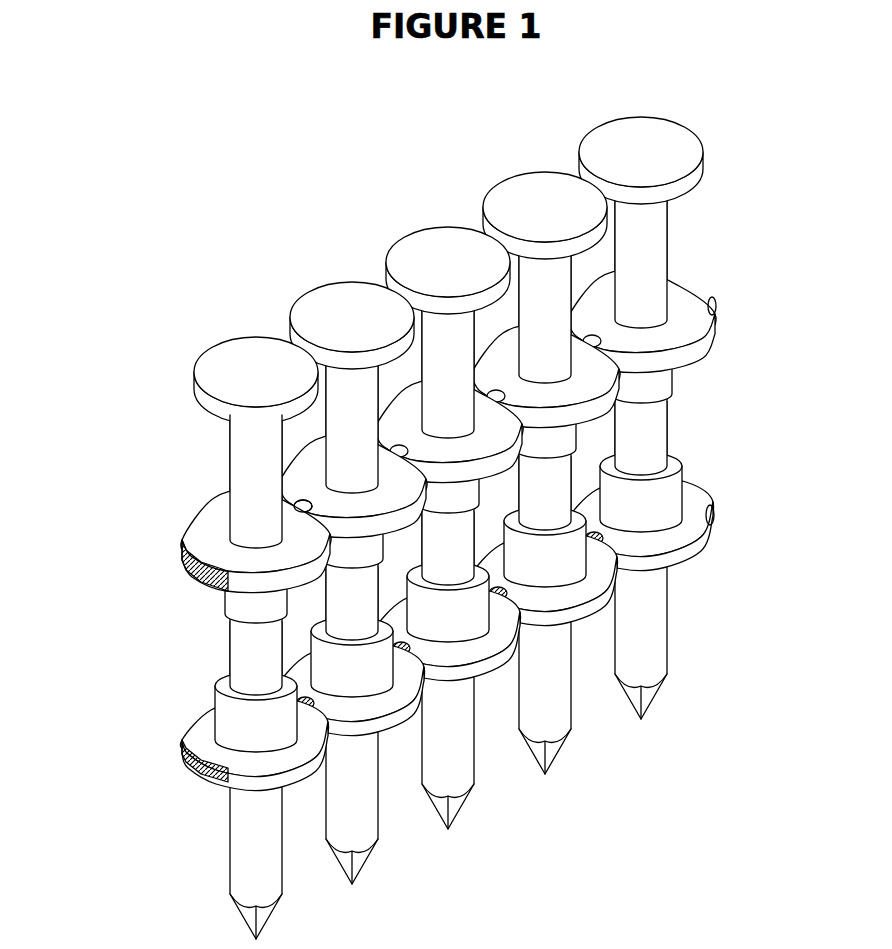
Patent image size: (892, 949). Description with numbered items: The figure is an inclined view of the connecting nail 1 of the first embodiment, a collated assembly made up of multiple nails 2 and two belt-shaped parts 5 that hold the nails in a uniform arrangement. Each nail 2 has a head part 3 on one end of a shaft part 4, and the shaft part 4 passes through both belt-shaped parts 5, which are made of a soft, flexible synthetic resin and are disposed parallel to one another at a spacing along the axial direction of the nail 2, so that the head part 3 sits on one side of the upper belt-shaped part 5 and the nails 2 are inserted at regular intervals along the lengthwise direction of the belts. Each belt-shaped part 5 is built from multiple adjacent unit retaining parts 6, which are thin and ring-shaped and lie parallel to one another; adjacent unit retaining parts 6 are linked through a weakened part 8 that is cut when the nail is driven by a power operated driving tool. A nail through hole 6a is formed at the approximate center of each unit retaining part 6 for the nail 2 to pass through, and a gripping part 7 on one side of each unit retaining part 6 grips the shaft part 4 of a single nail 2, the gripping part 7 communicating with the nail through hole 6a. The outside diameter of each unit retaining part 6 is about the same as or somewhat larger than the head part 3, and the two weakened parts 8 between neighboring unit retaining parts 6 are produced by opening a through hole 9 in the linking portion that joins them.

The connecting nail 1 is at (441, 528).
The nail 2 is at (578, 142).
The head part 3 is at (248, 348).
The shaft part 4 is at (636, 233).
The belt-shaped part 5 is at (176, 524).
The unit retaining part 6 is at (676, 383).
The nail through hole 6a is at (188, 552).
The gripping part 7 is at (355, 551).
The weakened part 8 is at (320, 398).
The through hole 9 is at (292, 506).